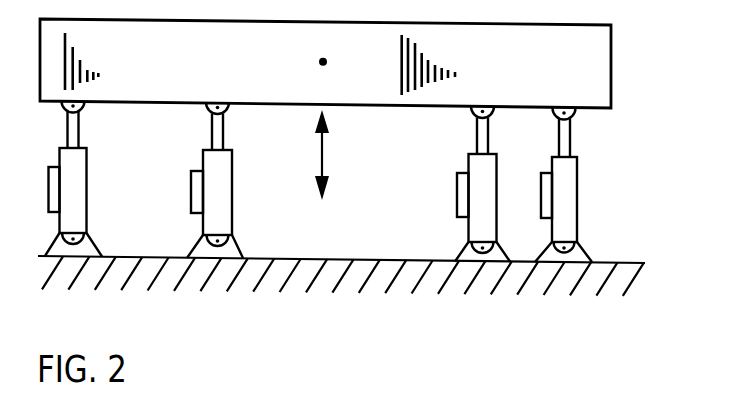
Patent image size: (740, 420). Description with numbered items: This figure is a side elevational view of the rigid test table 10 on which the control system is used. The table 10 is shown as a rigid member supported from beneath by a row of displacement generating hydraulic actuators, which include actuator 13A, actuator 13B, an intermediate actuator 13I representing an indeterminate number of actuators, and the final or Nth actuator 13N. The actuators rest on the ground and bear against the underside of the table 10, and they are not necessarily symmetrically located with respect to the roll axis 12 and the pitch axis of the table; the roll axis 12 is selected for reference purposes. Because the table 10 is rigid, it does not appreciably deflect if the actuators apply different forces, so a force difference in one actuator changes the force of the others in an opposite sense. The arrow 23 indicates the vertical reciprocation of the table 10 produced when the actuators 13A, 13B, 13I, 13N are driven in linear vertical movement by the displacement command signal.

The rigid test table 10 is at (611, 60).
The roll axis 12 is at (327, 60).
The arrow indicating vertical reciprocation 23 is at (322, 153).
The Nth actuator 13N is at (87, 181).
The actuator B 13B is at (232, 181).
The intermediate actuator 13I is at (468, 163).
The actuator A 13A is at (577, 197).